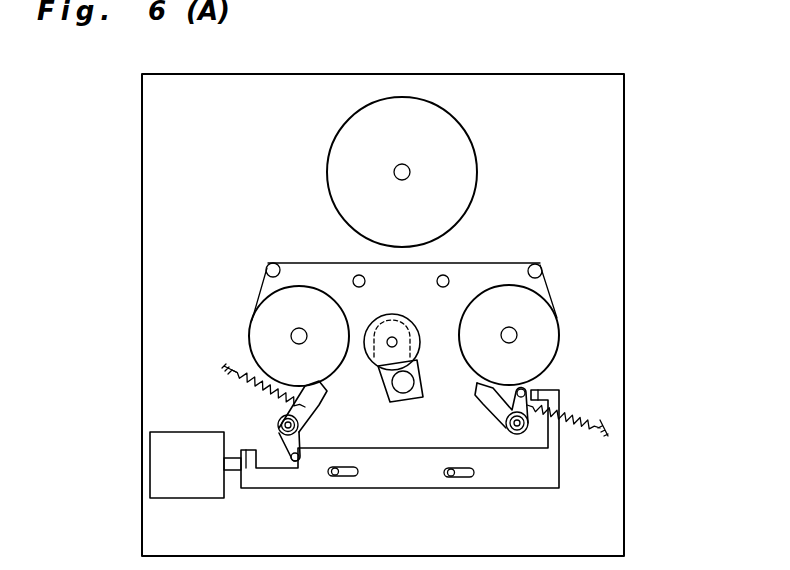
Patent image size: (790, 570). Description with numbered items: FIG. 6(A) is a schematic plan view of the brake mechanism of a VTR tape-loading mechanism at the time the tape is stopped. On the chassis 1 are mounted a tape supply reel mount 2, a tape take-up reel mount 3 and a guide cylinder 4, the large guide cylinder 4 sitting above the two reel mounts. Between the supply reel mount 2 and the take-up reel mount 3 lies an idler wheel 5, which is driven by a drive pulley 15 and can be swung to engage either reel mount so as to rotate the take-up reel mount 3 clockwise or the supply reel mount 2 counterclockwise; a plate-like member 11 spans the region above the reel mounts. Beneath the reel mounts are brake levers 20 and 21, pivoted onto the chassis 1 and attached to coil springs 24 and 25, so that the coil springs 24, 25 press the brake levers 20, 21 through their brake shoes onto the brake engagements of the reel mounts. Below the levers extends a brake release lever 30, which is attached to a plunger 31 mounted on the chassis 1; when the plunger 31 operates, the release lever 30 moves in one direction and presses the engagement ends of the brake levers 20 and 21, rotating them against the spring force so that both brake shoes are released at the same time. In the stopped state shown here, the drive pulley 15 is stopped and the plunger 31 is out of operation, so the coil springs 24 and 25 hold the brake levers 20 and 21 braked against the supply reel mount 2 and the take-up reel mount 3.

The chassis 1 is at (624, 333).
The tape supply reel mount 2 is at (257, 326).
The tape take-up reel mount 3 is at (537, 315).
The guide cylinder 4 is at (427, 110).
The idler wheel 5 is at (397, 322).
The plate 11 is at (483, 262).
The drive pulley 15 is at (403, 393).
The brake lever 20 is at (320, 404).
The brake lever 21 is at (496, 405).
The coil spring 24 is at (275, 398).
The coil spring 25 is at (577, 408).
The brake release lever 30 is at (403, 489).
The plunger 31 is at (191, 490).